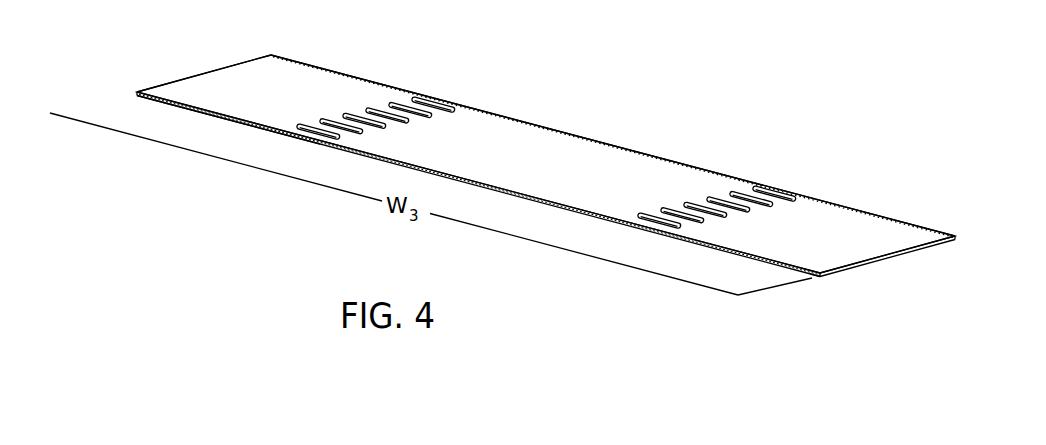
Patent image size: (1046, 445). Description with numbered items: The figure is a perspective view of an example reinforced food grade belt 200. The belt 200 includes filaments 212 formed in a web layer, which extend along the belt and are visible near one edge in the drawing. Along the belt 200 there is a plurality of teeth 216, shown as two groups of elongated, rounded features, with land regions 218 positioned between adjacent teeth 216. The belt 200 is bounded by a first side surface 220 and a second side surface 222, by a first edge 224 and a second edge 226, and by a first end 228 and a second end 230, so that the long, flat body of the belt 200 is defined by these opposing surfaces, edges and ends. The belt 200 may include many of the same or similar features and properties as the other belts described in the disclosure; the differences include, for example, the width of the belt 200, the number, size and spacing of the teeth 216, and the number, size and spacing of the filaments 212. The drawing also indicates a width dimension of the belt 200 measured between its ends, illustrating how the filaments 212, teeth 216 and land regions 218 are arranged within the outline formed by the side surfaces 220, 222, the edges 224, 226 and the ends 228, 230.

The food grade belt 200 is at (770, 124).
The filaments 212 is at (300, 138).
The teeth 216 is at (743, 190).
The land regions 218 is at (738, 218).
The first side surface 220 is at (827, 217).
The second side surface 222 is at (813, 279).
The first edge 224 is at (170, 83).
The second edge 226 is at (873, 261).
The first end 228 is at (500, 192).
The second end 230 is at (635, 150).